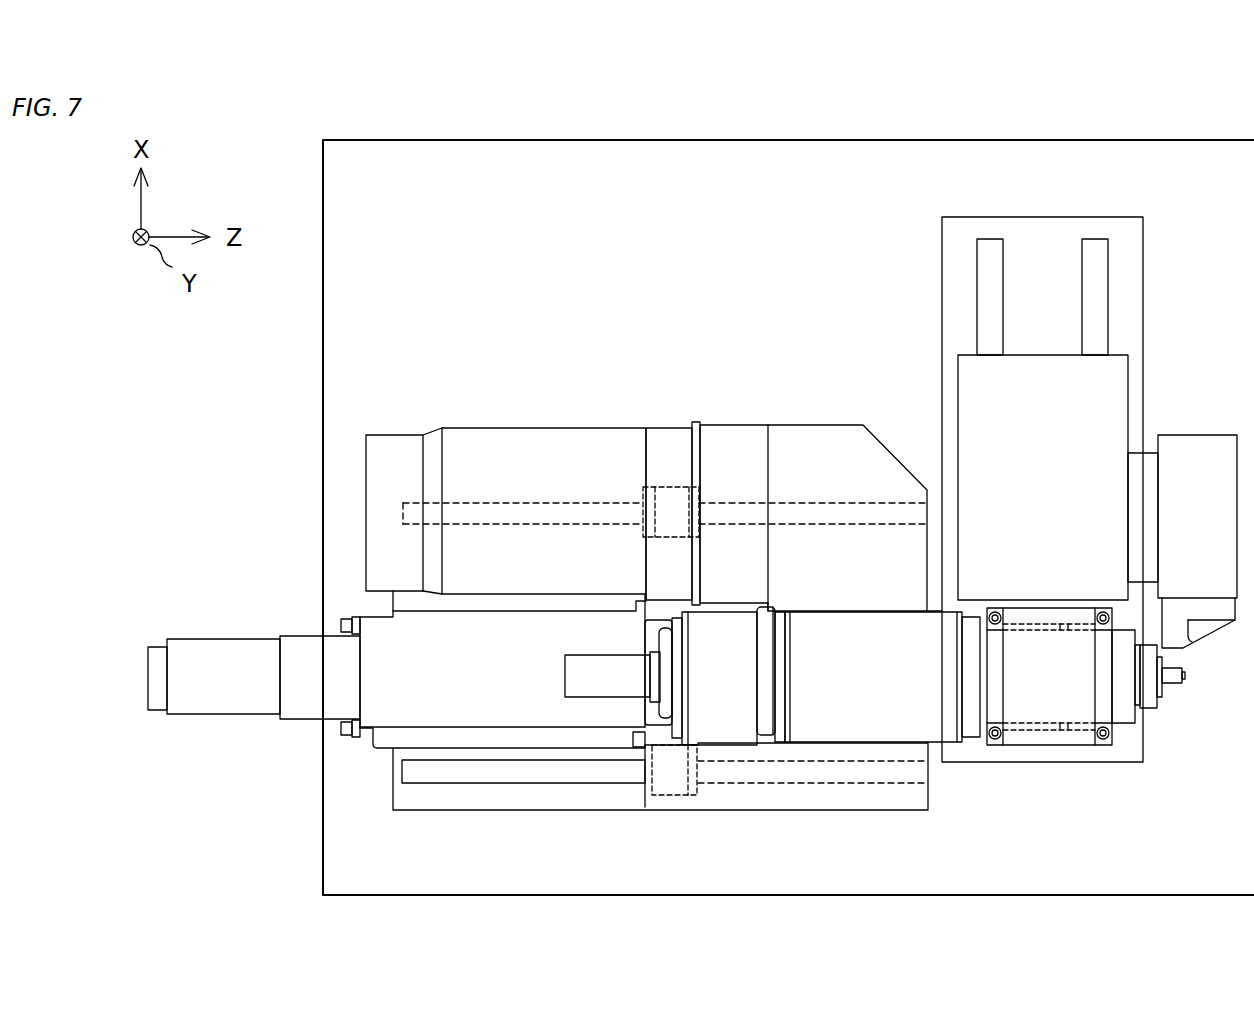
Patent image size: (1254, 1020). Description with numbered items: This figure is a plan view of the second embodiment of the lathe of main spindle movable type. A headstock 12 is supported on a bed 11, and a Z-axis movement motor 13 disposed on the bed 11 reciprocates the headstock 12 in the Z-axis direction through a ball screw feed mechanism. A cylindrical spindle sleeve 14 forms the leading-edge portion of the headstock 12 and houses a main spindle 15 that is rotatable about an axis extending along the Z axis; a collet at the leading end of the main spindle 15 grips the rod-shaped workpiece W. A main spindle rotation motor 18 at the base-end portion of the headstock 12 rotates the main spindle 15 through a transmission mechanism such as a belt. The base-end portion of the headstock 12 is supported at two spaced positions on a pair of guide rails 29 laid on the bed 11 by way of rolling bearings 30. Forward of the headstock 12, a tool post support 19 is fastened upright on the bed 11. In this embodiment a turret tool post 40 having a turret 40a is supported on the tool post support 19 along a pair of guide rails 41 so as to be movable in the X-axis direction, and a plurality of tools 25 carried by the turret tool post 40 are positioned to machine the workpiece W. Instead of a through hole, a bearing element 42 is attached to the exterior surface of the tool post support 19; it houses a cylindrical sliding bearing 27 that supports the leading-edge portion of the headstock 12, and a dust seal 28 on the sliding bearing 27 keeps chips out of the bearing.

The bed 11 is at (525, 812).
The headstock 12 is at (856, 621).
The Z-axis movement motor 13 is at (225, 640).
The spindle sleeve 14 is at (1030, 626).
The main spindle 15 is at (1162, 700).
The main spindle rotation motor 18 is at (556, 428).
The tool post support 19 is at (946, 328).
The tool 25 is at (1160, 655).
The sliding bearing 27 is at (1037, 739).
The dust seal 28 is at (1078, 739).
The guide rail 29 is at (544, 527).
The rolling bearing 30 is at (700, 538).
The turret tool post 40 is at (958, 410).
The turret 40a is at (1207, 436).
The guide rail 41 is at (989, 238).
The bearing element 42 is at (1074, 608).
The workpiece W is at (1169, 680).